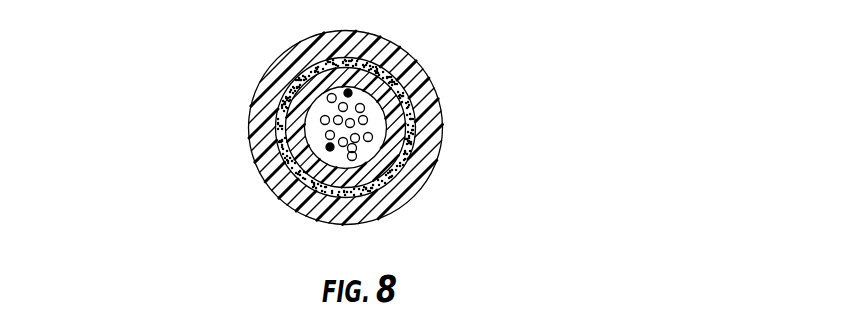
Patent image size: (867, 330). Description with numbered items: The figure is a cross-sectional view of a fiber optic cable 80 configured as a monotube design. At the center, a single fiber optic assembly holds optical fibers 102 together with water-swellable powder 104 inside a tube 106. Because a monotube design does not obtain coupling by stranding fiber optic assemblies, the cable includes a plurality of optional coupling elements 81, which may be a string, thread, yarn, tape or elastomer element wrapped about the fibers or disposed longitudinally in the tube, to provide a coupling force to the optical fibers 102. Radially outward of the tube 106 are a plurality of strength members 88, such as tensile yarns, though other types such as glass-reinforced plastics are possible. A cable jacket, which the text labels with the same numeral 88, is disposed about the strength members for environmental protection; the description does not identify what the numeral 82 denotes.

The fiber optic cable 80 is at (131, 80).
The coupling elements 81 is at (286, 62).
The strength members 88 is at (297, 203).
The water-blocking layer 82 is at (374, 180).
The tube 106 is at (297, 138).
The optical fibers 102 is at (348, 93).
The water-swellable powder 104 is at (332, 147).